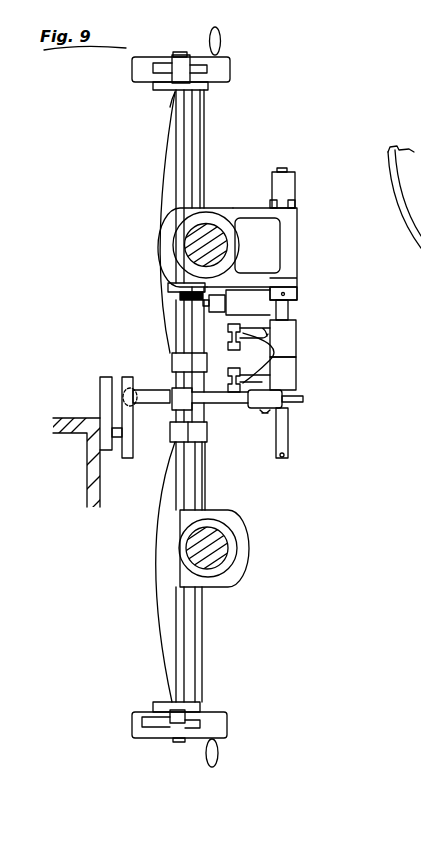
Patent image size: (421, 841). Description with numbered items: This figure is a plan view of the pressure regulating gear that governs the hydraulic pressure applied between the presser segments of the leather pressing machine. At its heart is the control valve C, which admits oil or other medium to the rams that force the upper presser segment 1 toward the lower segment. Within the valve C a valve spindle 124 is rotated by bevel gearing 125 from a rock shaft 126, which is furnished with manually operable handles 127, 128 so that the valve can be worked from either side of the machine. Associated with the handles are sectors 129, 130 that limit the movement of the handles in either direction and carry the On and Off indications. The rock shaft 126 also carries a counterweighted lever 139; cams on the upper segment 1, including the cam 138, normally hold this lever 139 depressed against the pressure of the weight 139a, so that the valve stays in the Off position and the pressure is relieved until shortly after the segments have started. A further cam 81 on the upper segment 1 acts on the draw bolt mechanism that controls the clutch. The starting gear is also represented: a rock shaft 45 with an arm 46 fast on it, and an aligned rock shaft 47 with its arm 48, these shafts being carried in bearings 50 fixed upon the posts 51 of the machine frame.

The upper presser segment 1 is at (102, 503).
The rock shaft 45 is at (282, 432).
The arm 46 is at (290, 375).
The rock shaft 47 is at (288, 313).
The arm 48 is at (290, 343).
The bearing 50 is at (294, 232).
The post 51 is at (210, 240).
The cam 81 is at (104, 396).
The valve spindle 124 is at (236, 303).
The bevel gearing 125 is at (182, 296).
The rock shaft 126 is at (181, 148).
The handle 127 is at (220, 748).
The handle 128 is at (222, 44).
The sector 129 is at (142, 738).
The sector 130 is at (170, 57).
The cam 138 is at (128, 447).
The counterweighted lever 139 is at (208, 404).
The weight 139a is at (268, 398).
The control valve C is at (292, 284).